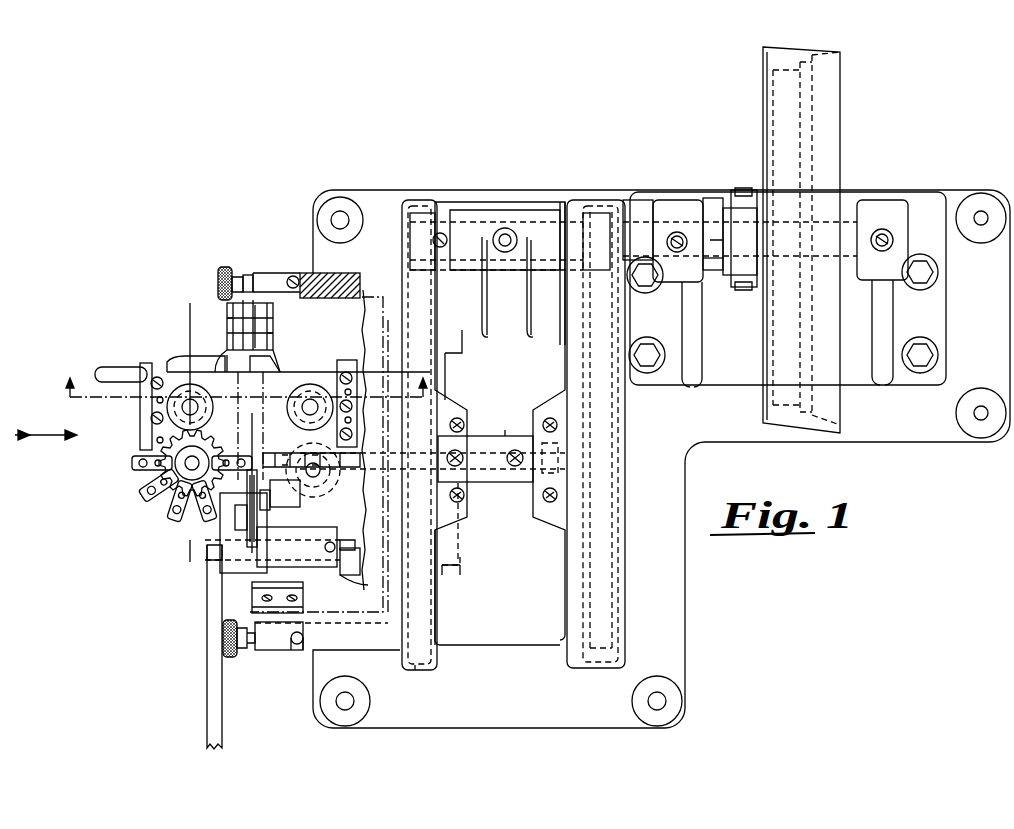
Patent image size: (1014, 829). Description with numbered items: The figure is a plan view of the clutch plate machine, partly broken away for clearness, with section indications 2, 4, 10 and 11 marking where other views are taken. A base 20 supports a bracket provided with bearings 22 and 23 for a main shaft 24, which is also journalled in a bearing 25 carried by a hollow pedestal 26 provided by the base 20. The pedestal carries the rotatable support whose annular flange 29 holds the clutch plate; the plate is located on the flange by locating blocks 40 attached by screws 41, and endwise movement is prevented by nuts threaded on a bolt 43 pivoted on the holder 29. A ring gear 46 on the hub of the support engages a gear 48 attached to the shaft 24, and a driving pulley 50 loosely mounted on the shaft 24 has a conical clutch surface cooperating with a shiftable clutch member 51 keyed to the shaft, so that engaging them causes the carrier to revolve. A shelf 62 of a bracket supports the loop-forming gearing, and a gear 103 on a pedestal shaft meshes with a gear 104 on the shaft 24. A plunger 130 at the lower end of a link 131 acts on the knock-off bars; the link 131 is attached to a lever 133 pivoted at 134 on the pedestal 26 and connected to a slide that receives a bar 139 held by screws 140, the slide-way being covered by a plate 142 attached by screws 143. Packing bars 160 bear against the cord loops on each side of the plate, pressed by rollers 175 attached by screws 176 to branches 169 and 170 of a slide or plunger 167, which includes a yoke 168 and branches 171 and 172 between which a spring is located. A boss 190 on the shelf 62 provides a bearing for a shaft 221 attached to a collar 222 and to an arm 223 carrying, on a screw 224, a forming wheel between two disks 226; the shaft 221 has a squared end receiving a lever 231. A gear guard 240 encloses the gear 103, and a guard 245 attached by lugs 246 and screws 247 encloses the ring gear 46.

The section direction arrow 2 is at (38, 435).
The section line 4- 4 is at (245, 375).
The feed mechanism unit 10 is at (188, 303).
The section line 11- 11 is at (296, 553).
The base 20 is at (880, 192).
The bearing 22 is at (675, 202).
The bearing 23 is at (900, 207).
The main shaft 24 is at (637, 225).
The bearing 25 is at (500, 210).
The hollow pedestal 26 is at (540, 580).
The annular flange 29 is at (348, 285).
The locating block 40 is at (252, 597).
The screw 41 is at (298, 598).
The bolt 43 is at (225, 265).
The ring gear 46 is at (427, 660).
The gear 48 is at (418, 213).
The driving pulley 50 is at (805, 52).
The shiftable clutch member 51 is at (763, 62).
The shelf 62 is at (353, 543).
The gear 103 is at (620, 652).
The gear 104 is at (595, 213).
The plunger 130 is at (245, 422).
The link 131 is at (312, 498).
The lever 133 is at (482, 450).
The pivot 134 is at (455, 350).
The bar 139 is at (508, 437).
The screws 140 is at (515, 464).
The plate 142 is at (545, 518).
The screws 143 is at (550, 418).
The packing bar 160 is at (235, 303).
The slide or plunger 167 is at (280, 364).
The yoke 168 is at (217, 356).
The branch 169 is at (256, 303).
The branch 170 is at (248, 300).
The branch 171 is at (297, 410).
The branch 172 is at (215, 405).
The roller 175 is at (232, 318).
The screw 176 is at (274, 333).
The boss 190 is at (330, 540).
The shaft 221 is at (368, 588).
The collar 222 is at (332, 568).
The arm 223 is at (218, 562).
The screw 224 is at (268, 508).
The disks 226 is at (240, 518).
The lever 231 is at (207, 703).
The gear guard 240 is at (625, 547).
The guard 245 is at (415, 670).
The lugs 246 is at (452, 400).
The screws 247 is at (460, 500).